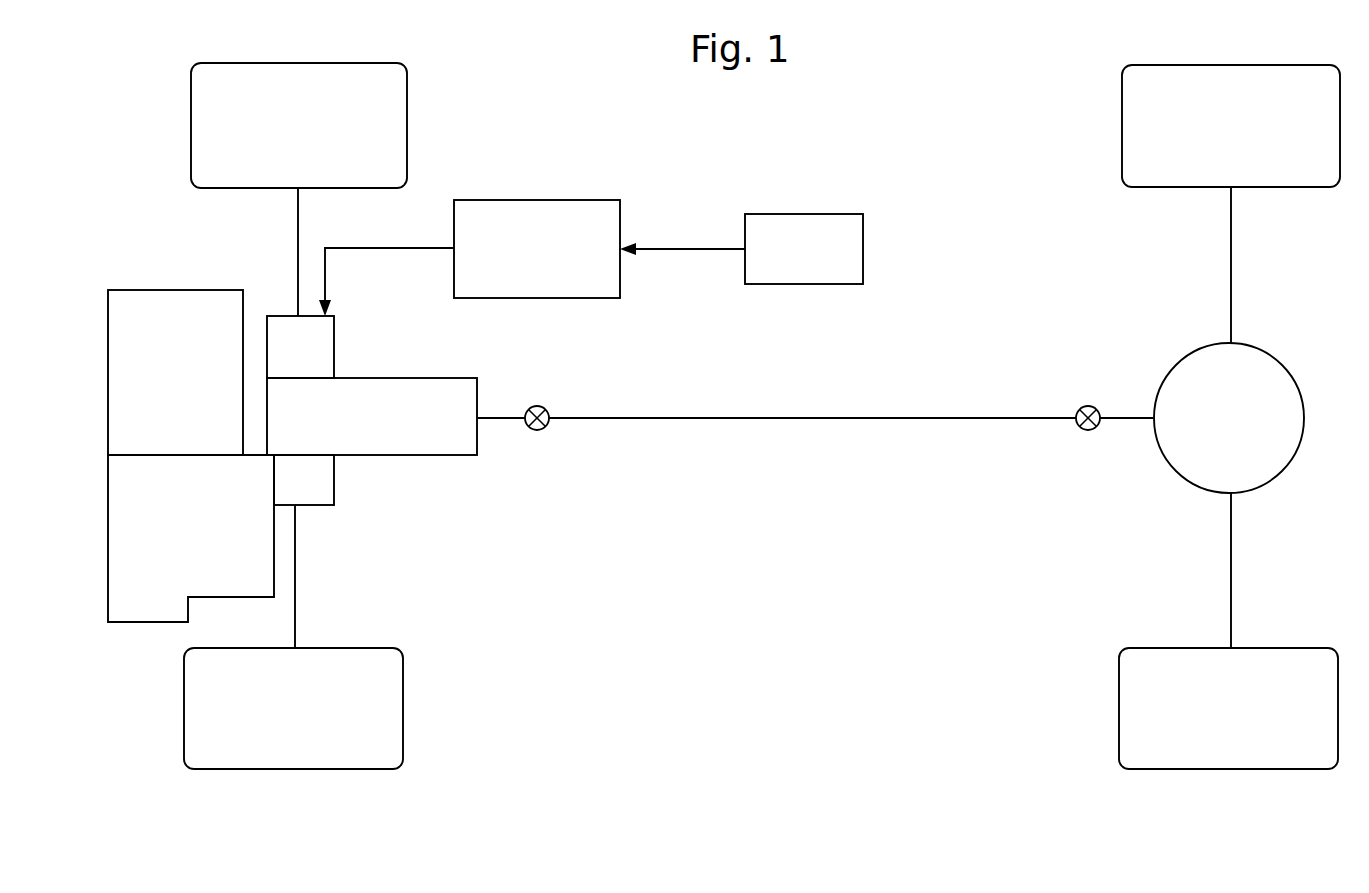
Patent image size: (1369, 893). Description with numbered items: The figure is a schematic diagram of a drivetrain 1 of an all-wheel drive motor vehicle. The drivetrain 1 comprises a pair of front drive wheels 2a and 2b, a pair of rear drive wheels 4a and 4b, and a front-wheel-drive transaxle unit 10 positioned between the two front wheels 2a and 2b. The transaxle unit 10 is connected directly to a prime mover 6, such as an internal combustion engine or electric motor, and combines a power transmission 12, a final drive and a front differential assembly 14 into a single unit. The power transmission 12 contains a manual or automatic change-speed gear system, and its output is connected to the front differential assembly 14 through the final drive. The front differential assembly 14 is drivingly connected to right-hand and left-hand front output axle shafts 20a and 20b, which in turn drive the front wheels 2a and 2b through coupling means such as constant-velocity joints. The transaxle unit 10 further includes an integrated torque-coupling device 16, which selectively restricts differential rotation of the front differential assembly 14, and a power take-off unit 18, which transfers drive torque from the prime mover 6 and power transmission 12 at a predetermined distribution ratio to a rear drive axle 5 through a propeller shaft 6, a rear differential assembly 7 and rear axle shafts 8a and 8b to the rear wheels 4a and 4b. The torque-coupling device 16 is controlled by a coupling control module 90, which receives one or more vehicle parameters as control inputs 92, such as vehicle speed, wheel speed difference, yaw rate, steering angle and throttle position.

The drivetrain 1 is at (724, 550).
The front drive wheel 2a is at (407, 122).
The front drive wheel 2b is at (403, 712).
The rear drive wheel 4a is at (1122, 137).
The rear drive wheel 4b is at (1119, 727).
The rear drive axle 5 is at (1260, 403).
The prime mover 6 is at (108, 372).
The rear differential assembly 7 is at (1278, 448).
The rear axle shaft 8a is at (1231, 265).
The rear axle shaft 8b is at (1231, 570).
The front-wheel-drive transaxle unit 10 is at (318, 522).
The power transmission 12 is at (108, 522).
The front differential assembly 14 is at (334, 480).
The torque-coupling device 16 is at (280, 322).
The power take-off unit 18 is at (420, 378).
The front output axle shaft 20a is at (298, 209).
The front output axle shaft 20b is at (295, 588).
The coupling control module 90 is at (565, 200).
The control inputs 92 is at (828, 214).